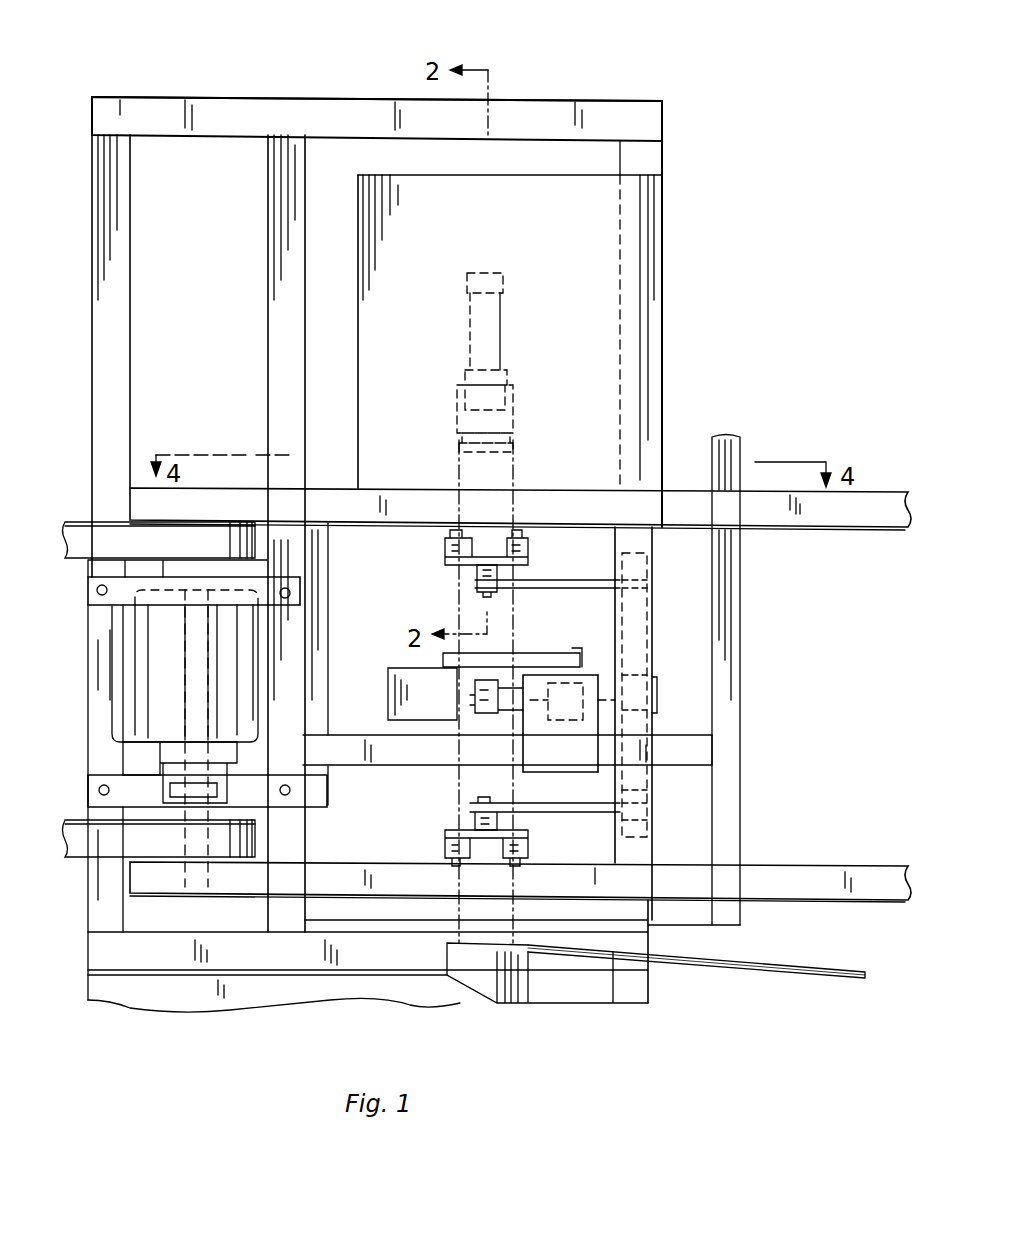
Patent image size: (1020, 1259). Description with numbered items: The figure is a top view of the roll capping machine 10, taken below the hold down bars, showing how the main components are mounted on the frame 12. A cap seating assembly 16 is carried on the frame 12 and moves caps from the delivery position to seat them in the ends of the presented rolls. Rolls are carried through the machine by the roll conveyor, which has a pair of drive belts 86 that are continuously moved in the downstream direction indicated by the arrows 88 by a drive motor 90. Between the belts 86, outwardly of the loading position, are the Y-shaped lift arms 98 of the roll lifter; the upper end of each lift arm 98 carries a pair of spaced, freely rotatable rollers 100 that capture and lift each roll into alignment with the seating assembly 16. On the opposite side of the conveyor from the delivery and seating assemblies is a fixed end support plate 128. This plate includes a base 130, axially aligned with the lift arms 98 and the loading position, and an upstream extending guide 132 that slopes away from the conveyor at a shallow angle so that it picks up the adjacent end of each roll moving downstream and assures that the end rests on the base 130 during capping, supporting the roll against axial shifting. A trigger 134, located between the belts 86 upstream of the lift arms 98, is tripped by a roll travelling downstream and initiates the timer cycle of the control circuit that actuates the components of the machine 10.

The roll capping machine 10 is at (224, 60).
The frame 12 is at (353, 98).
The cap seating assembly 16 is at (535, 389).
The drive belts 86 is at (870, 518).
The arrows 88 is at (706, 508).
The drive motor 90 is at (240, 660).
The lift arms 98 is at (445, 560).
The rollers 100 is at (515, 538).
The end support plate 128 is at (695, 966).
The base 130 is at (497, 1003).
The guide 132 is at (800, 975).
The trigger 134 is at (566, 720).